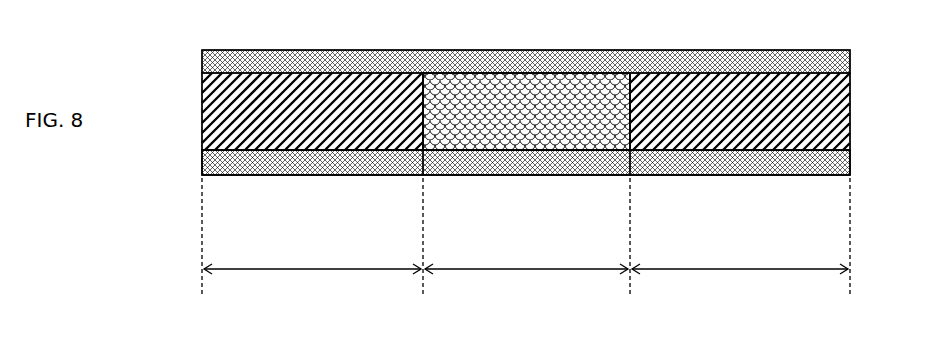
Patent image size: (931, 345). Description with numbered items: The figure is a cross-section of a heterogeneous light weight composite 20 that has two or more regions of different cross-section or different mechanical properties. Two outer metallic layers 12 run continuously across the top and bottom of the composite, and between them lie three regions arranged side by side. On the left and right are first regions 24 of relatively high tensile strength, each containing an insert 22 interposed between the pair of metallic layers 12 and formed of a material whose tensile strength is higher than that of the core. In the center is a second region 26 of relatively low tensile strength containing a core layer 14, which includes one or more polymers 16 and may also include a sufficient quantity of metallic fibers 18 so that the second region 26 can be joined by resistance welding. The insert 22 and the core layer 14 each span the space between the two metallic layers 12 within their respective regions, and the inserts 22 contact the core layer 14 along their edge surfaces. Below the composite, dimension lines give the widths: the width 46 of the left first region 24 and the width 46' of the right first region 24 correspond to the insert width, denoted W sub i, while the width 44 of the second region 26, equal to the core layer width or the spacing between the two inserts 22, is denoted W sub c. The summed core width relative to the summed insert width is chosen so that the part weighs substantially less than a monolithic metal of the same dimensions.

The metallic layers 12 is at (382, 64).
The core layer 14 is at (440, 98).
The polymers 16 is at (487, 96).
The metallic fibers 18 is at (535, 98).
The heterogeneous light weight composite 20 is at (641, 19).
The insert 22 is at (258, 125).
The first region 24 is at (297, 170).
The second region 26 is at (541, 168).
The width of the second region 44 is at (532, 270).
The width of the first region 46 is at (312, 297).
The width of the first region 46' is at (740, 297).